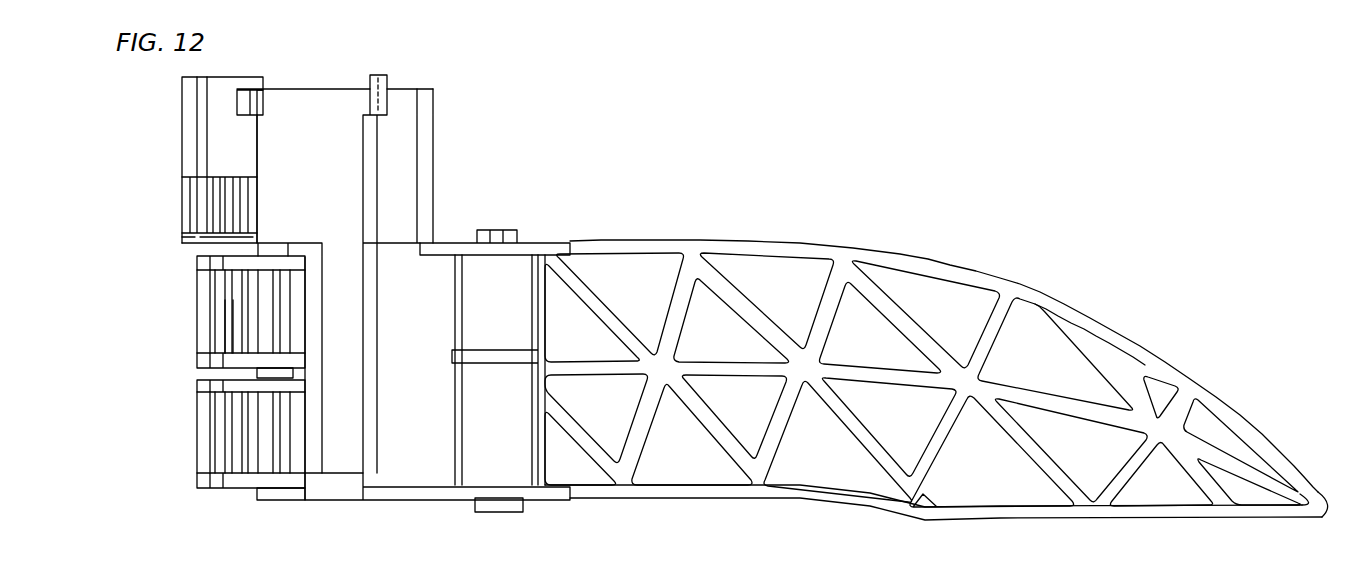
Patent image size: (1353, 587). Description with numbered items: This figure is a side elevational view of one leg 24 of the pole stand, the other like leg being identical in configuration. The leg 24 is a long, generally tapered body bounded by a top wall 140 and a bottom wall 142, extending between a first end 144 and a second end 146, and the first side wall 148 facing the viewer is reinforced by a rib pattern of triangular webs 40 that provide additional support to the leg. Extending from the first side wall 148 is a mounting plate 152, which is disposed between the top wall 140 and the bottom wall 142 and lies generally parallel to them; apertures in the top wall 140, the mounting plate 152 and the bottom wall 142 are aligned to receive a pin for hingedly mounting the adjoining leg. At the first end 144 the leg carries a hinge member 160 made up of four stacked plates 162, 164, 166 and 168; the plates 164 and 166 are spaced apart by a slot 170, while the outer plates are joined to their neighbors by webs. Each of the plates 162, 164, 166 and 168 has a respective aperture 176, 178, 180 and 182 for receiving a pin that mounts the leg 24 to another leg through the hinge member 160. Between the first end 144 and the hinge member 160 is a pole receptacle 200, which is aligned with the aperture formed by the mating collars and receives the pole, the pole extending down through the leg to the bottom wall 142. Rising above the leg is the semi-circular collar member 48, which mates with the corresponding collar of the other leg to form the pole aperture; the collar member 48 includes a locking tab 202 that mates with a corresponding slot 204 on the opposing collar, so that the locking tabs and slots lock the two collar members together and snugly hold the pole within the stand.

The leg 24 is at (954, 222).
The triangular webs 40 is at (1082, 352).
The semi-circular collar member 48 is at (285, 145).
The top wall 140 is at (993, 275).
The bottom wall 142 is at (773, 499).
The first end 144 is at (450, 243).
The second end 146 is at (1320, 490).
The first side wall 148 is at (693, 343).
The mounting plate 152 is at (477, 349).
The hinge member 160 is at (270, 502).
The plate 162 is at (197, 268).
The plate 164 is at (198, 365).
The plate 166 is at (198, 387).
The plate 168 is at (198, 478).
The slot 170 is at (303, 372).
The aperture 176 is at (233, 269).
The aperture 178 is at (230, 360).
The aperture 180 is at (233, 385).
The aperture 182 is at (228, 483).
The pole receptacle 200 is at (330, 290).
The locking tab 202 is at (375, 82).
The slot 204 is at (250, 104).